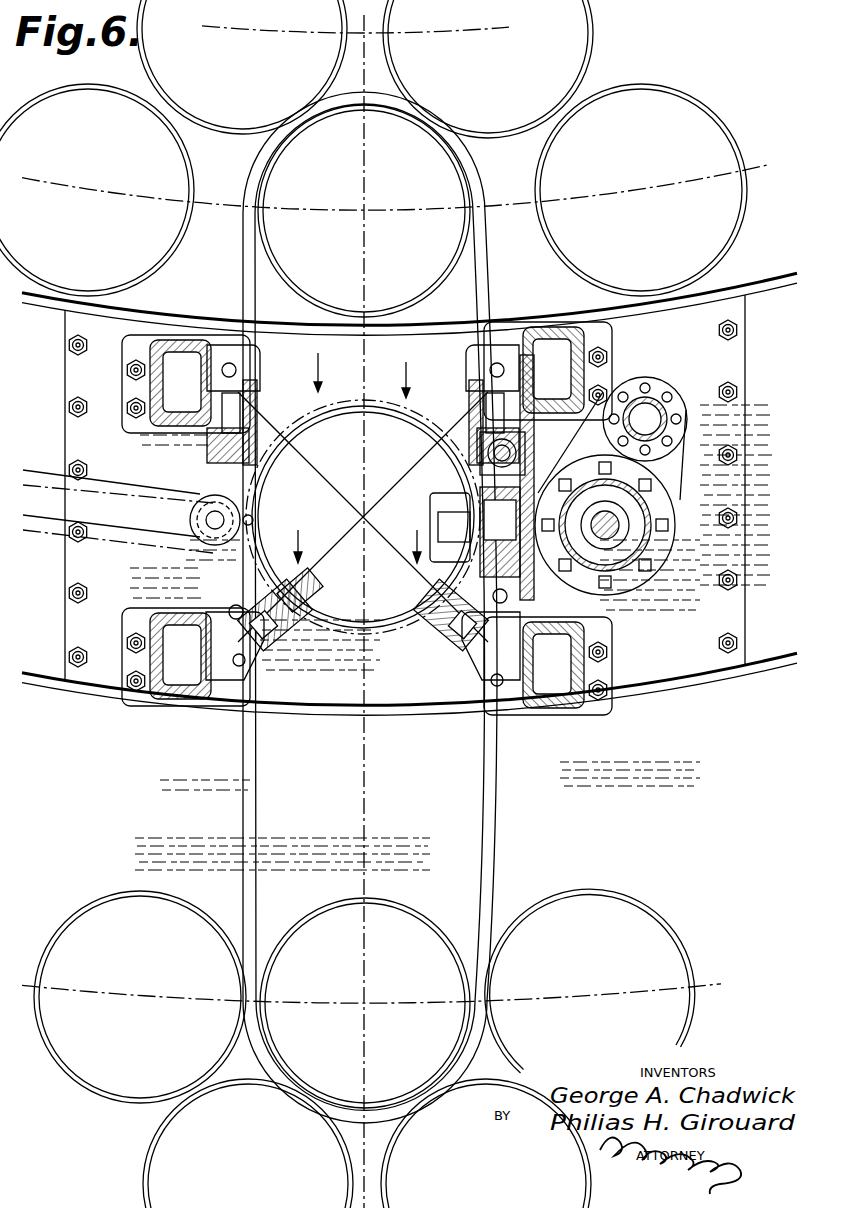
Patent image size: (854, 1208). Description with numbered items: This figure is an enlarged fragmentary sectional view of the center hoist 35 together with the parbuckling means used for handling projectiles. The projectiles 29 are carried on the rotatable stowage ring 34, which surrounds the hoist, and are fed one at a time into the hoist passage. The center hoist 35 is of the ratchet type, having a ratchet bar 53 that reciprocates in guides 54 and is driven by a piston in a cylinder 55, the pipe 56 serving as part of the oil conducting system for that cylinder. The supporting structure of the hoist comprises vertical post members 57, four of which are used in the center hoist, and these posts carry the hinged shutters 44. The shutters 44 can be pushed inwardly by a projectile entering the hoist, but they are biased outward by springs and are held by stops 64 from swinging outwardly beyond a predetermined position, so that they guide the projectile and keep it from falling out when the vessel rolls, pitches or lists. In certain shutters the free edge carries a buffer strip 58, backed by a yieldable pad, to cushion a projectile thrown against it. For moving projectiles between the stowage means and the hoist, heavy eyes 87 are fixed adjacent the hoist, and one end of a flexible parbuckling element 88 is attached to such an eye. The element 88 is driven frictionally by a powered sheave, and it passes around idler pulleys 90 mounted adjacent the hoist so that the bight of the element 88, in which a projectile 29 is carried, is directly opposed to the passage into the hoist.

The projectile 29 is at (150, 167).
The rotatable stowage ring 34 is at (724, 64).
The center hoist 35 is at (332, 508).
The shutters 44 is at (250, 412).
The ratchet bar 53 is at (497, 537).
The guides 54 is at (473, 490).
The cylinder 55 is at (633, 517).
The pipe 56 is at (646, 398).
The vertical post members 57 is at (192, 382).
The buffer strip 58 is at (302, 604).
The stops 64 is at (245, 372).
The heavy eyes 87 is at (483, 453).
The flexible parbuckling element 88 is at (490, 298).
The idler pulleys 90 is at (192, 518).